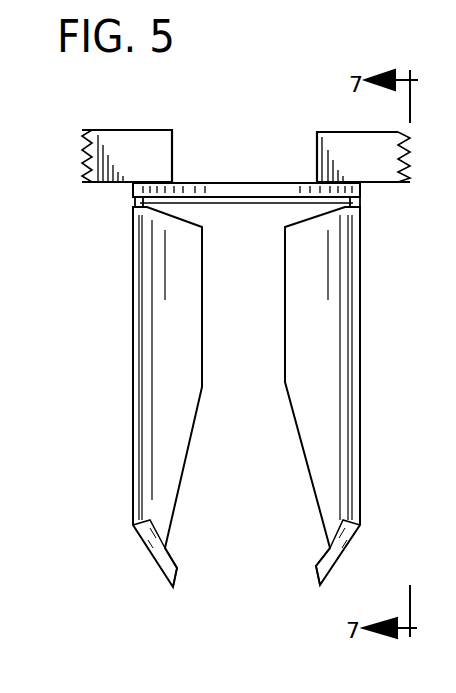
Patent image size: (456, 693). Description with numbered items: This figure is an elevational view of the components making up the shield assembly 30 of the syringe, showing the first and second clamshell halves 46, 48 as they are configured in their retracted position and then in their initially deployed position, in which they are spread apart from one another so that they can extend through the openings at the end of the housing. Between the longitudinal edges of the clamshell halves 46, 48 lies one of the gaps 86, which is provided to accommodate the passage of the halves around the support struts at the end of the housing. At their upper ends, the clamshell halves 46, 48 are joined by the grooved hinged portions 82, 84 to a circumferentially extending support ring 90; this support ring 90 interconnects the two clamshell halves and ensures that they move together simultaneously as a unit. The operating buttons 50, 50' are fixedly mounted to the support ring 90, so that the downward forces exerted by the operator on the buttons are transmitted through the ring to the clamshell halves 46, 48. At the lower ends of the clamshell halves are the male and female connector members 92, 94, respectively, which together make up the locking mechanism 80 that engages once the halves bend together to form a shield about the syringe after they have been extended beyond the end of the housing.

The shield assembly 30 is at (232, 397).
The first clamshell half 46 is at (140, 360).
The second clamshell half 48 is at (345, 367).
The operating button 50 is at (99, 131).
The operating button 50' is at (333, 131).
The locking mechanism 80 is at (168, 592).
The grooved hinged portion 82 is at (133, 203).
The grooved hinged portion 84 is at (357, 207).
The gap 86 is at (240, 384).
The support ring 90 is at (240, 186).
The male connector member 92 is at (158, 563).
The female connector member 94 is at (318, 563).